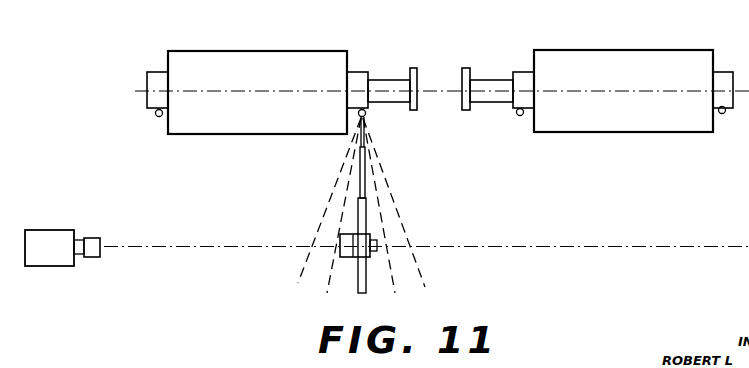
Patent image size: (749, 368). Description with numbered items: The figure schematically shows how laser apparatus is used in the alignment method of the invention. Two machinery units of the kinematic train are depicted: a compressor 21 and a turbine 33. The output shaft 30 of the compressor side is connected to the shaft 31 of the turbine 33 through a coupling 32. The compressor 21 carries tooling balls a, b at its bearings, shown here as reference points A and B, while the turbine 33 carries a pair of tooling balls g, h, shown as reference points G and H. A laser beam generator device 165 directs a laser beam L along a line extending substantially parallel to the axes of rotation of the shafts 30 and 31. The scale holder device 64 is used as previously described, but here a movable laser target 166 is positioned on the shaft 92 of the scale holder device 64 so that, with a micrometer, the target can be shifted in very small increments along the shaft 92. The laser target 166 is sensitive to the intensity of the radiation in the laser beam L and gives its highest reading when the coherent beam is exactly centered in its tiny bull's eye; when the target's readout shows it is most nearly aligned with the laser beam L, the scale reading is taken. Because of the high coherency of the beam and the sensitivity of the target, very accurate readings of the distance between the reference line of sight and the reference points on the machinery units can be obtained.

The compressor 21 is at (236, 51).
The shaft 30 is at (402, 79).
The shaft 31 is at (510, 78).
The coupling 32 is at (440, 101).
The turbine 33 is at (612, 50).
The scale holder device 64 is at (374, 180).
The shaft of the scale holder device 92 is at (361, 207).
The laser beam generator device 165 is at (42, 232).
The laser target 166 is at (338, 252).
The tooling ball A is at (155, 115).
The tooling ball B is at (366, 113).
The tooling ball G is at (517, 115).
The tooling ball H is at (725, 113).
The laser beam L is at (188, 245).